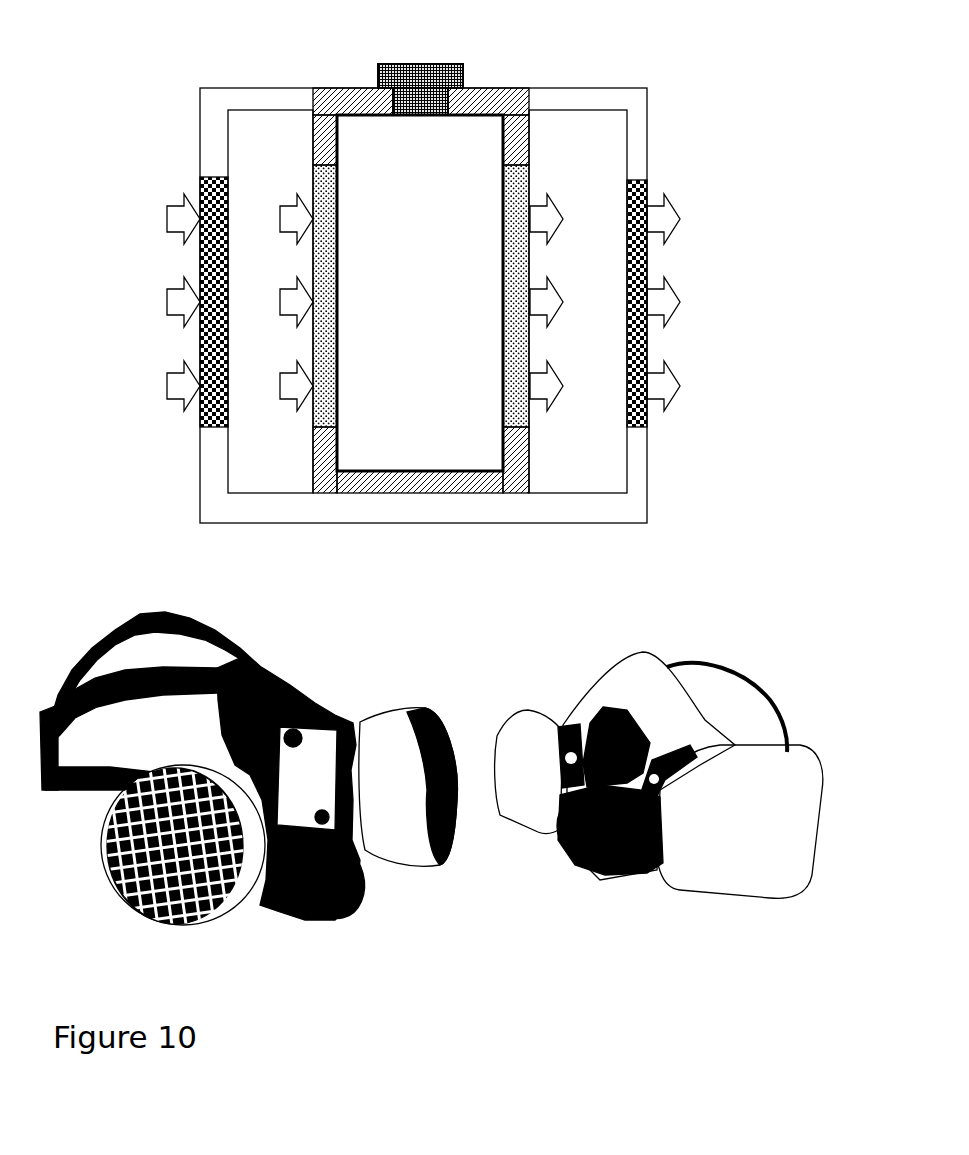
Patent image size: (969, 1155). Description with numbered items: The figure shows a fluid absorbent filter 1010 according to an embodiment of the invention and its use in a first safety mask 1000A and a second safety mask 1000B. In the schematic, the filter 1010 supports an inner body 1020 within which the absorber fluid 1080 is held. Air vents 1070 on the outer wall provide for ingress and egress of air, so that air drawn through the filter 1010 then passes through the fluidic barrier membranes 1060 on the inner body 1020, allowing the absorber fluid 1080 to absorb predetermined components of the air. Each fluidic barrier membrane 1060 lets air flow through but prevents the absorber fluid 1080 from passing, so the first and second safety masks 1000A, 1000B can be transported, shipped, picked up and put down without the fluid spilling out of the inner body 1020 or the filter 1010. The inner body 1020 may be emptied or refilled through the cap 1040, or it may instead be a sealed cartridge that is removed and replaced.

The fluid absorbent filter 1010 is at (647, 495).
The inner body 1020 is at (323, 452).
The cap 1040 is at (475, 70).
The fluidic barrier membrane 1060 is at (311, 175).
The air vent 1070 is at (647, 192).
The absorber fluid 1080 is at (465, 458).
The first safety mask 1000A is at (206, 791).
The second safety mask 1000B is at (690, 811).